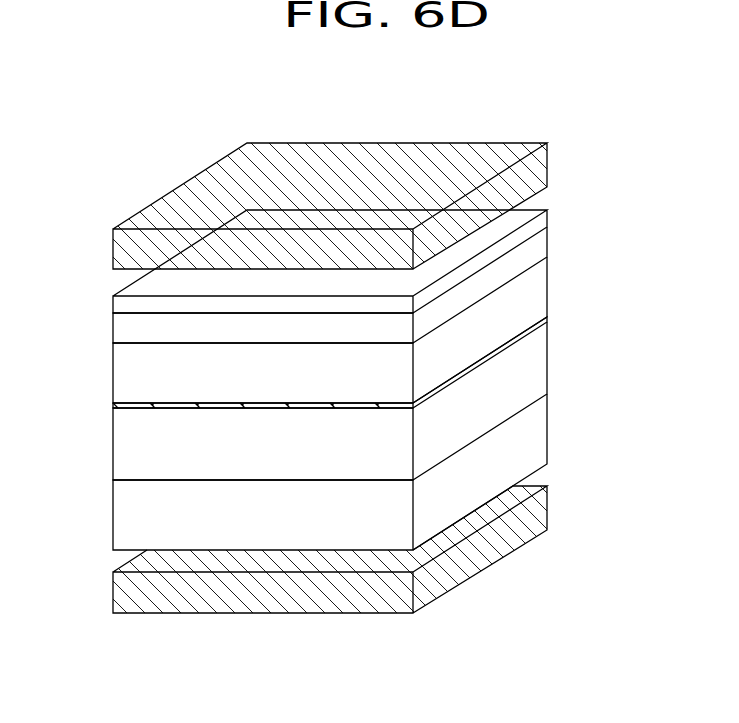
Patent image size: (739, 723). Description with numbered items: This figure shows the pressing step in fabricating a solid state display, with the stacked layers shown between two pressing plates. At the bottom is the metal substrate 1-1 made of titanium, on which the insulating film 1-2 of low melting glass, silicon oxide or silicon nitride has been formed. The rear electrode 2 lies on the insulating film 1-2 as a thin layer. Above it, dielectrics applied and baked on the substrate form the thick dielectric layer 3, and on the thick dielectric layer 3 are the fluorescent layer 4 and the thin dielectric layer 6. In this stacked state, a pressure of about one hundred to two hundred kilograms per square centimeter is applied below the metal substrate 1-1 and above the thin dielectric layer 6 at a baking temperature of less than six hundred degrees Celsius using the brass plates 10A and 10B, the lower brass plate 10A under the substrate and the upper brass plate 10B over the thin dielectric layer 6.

The brass plate 10B is at (540, 173).
The thin dielectric layer 6 is at (540, 217).
The fluorescent layer 4 is at (537, 250).
The thick dielectric layer 3 is at (537, 297).
The rear electrode 2 is at (165, 403).
The insulating film 1-2 is at (537, 360).
The metal substrate 1-1 is at (537, 430).
The brass plate 10A is at (540, 515).